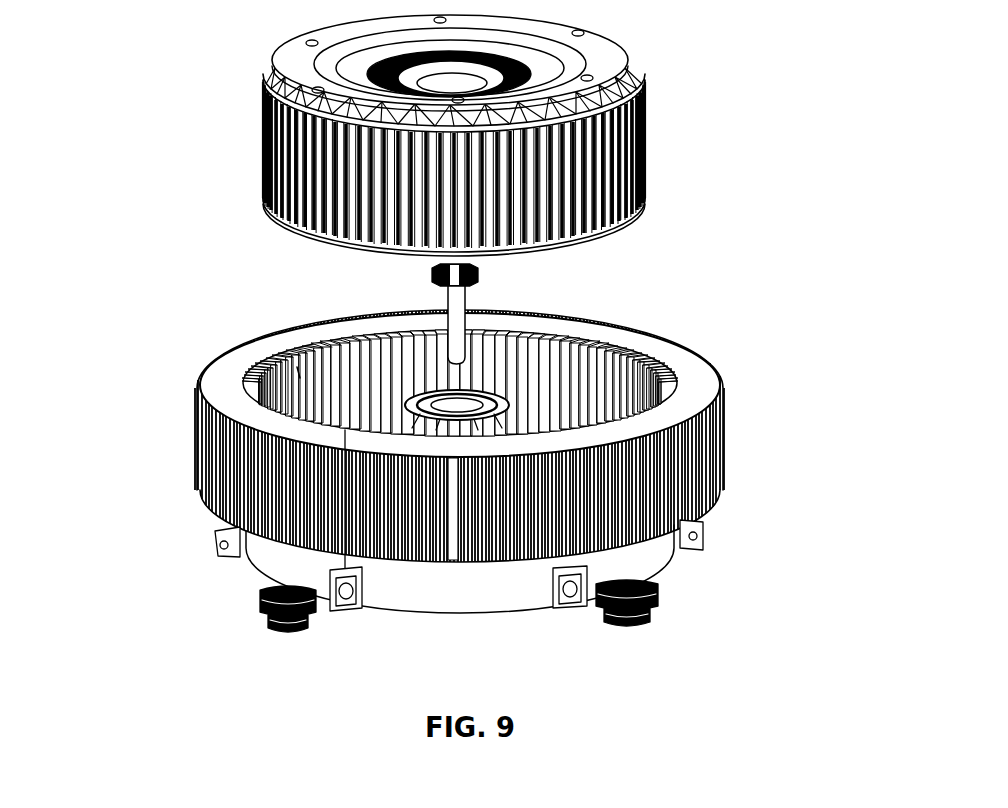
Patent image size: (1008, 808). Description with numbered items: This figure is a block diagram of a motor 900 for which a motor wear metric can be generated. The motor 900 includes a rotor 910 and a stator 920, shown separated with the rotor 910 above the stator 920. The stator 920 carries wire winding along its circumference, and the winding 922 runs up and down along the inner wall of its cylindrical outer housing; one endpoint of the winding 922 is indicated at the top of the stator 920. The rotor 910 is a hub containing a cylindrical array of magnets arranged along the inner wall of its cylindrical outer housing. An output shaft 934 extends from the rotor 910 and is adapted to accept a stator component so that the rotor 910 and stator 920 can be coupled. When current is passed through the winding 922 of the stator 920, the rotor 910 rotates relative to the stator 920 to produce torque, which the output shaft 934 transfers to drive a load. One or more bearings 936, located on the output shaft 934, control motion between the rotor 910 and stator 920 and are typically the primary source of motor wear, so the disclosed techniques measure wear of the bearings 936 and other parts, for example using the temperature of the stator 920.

The motor 900 is at (497, 780).
The rotor 910 is at (665, 100).
The stator 920 is at (753, 450).
The winding 922 is at (297, 367).
The output shaft 934 is at (466, 310).
The bearings 936 is at (478, 272).